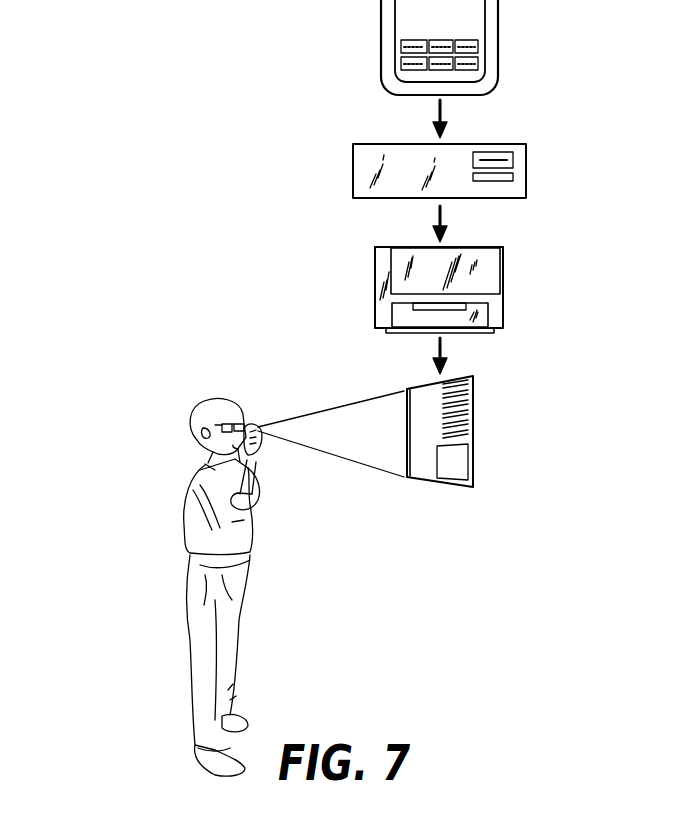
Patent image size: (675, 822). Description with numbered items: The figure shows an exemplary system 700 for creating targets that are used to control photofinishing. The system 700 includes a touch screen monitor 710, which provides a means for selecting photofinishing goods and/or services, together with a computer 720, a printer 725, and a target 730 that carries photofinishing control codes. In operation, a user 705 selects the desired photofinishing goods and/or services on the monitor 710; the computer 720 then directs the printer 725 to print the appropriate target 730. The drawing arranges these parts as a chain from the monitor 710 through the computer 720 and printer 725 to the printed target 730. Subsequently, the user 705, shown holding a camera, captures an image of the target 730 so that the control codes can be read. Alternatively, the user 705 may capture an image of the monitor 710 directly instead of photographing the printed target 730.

The system 700 is at (130, 133).
The user 705 is at (190, 420).
The touch screen monitor 710 is at (498, 40).
The computer 720 is at (526, 165).
The printer 725 is at (503, 276).
The target 730 is at (473, 420).